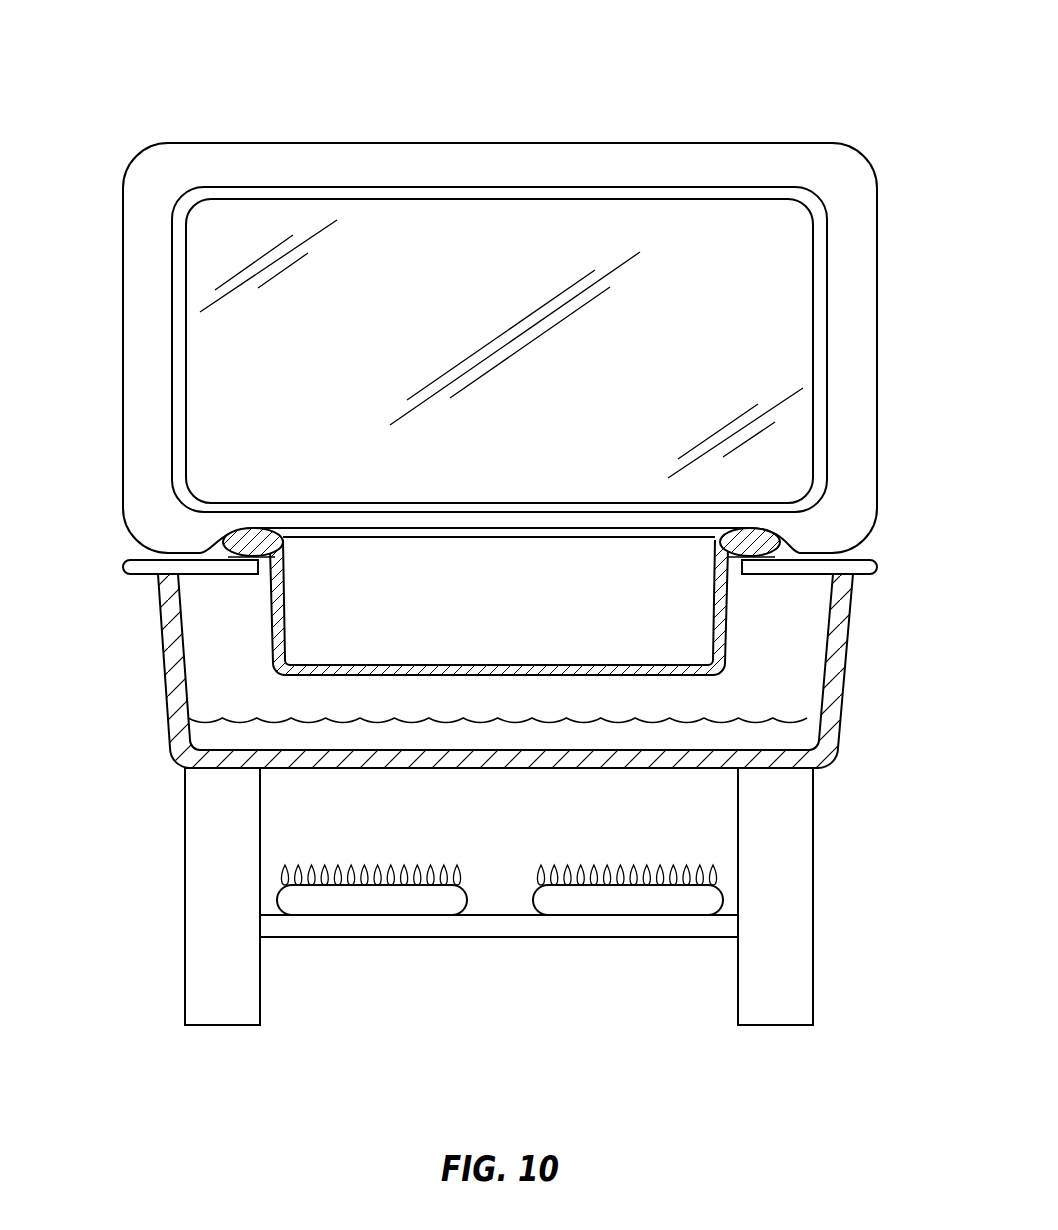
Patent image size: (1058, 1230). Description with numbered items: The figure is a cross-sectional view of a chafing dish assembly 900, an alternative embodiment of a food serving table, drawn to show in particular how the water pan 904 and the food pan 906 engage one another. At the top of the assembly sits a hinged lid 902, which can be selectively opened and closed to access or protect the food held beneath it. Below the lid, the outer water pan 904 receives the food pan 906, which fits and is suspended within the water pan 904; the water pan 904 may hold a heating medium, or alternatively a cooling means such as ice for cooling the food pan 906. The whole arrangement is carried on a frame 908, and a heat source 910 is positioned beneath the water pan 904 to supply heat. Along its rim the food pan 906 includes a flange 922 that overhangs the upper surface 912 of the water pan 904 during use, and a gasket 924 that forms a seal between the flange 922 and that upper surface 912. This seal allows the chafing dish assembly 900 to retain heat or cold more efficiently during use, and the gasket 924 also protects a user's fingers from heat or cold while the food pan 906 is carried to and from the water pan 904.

The chafing dish assembly 900 is at (805, 95).
The hinged lid 902 is at (388, 332).
The water pan 904 is at (843, 682).
The food pan 906 is at (520, 610).
The frame 908 is at (222, 848).
The heat source 910 is at (370, 900).
The upper surface 912 is at (150, 546).
The flange 922 is at (235, 538).
The gasket 924 is at (248, 558).